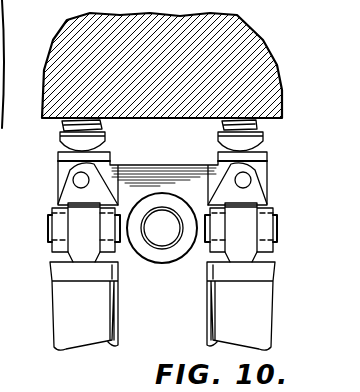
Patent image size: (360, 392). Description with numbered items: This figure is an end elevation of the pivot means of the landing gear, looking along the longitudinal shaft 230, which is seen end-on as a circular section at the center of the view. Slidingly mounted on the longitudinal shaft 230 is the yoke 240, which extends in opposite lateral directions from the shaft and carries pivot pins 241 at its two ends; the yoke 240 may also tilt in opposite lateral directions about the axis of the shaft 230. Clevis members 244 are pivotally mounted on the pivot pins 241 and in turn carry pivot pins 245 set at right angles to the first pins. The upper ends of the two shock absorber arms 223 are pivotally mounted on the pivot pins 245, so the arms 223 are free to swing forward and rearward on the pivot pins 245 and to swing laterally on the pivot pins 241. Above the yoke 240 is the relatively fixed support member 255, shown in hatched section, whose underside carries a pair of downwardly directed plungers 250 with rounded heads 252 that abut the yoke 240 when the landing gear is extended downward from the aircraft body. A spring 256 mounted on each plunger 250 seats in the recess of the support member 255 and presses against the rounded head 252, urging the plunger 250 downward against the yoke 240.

The support member 255 is at (203, 53).
The spring 256 is at (92, 118).
The plungers 250 is at (118, 119).
The rounded heads 252 is at (106, 136).
The yoke 240 is at (150, 172).
The pivot pins 241 is at (73, 176).
The clevis members 244 is at (55, 208).
The pivot pins 245 is at (47, 236).
The longitudinal shaft 230 is at (162, 234).
The shock absorber arms 223 is at (108, 327).